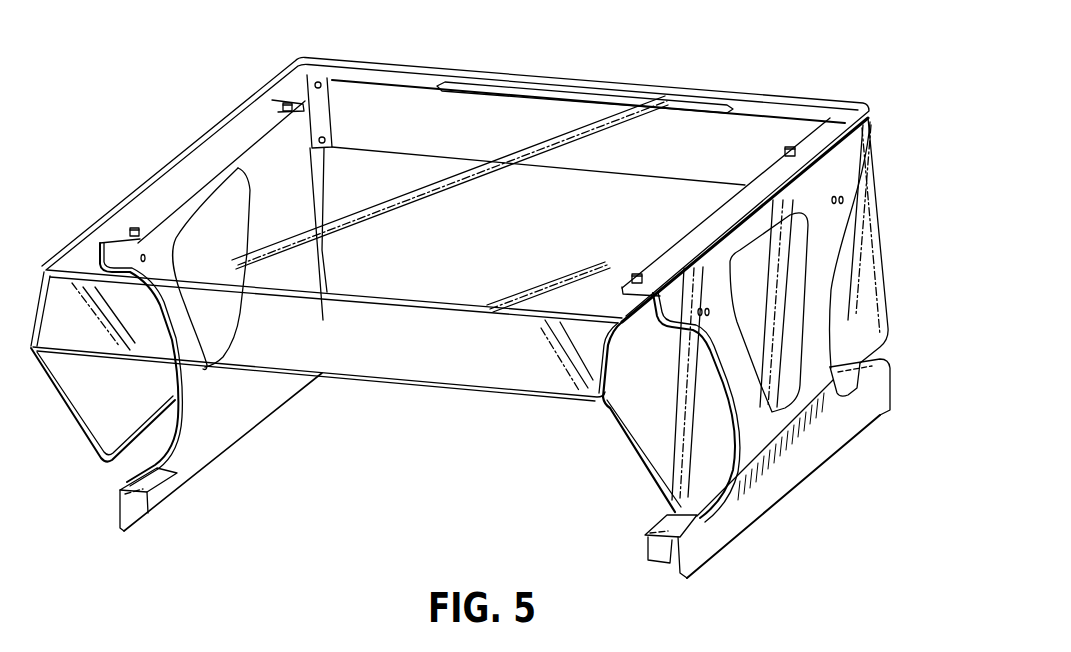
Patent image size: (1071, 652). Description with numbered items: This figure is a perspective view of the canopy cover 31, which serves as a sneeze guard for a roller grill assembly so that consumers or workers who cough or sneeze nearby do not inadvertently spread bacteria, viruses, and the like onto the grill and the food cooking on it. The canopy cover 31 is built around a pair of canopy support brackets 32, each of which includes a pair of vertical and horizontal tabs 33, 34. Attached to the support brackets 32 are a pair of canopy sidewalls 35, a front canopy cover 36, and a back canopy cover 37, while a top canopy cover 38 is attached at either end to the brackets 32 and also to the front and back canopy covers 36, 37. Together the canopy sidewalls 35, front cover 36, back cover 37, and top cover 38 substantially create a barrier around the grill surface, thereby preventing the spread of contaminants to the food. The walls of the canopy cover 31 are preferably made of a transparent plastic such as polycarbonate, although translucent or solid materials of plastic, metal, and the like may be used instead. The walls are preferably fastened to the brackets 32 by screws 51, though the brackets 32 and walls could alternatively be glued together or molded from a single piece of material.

The canopy cover 31 is at (895, 236).
The canopy support bracket 32 is at (823, 330).
The vertical tab 33 is at (647, 557).
The horizontal tab 34 is at (170, 480).
The canopy sidewall 35 is at (633, 452).
The front canopy cover 36 is at (373, 380).
The back canopy cover 37 is at (577, 153).
The top canopy cover 38 is at (330, 172).
The screw 51 is at (317, 80).